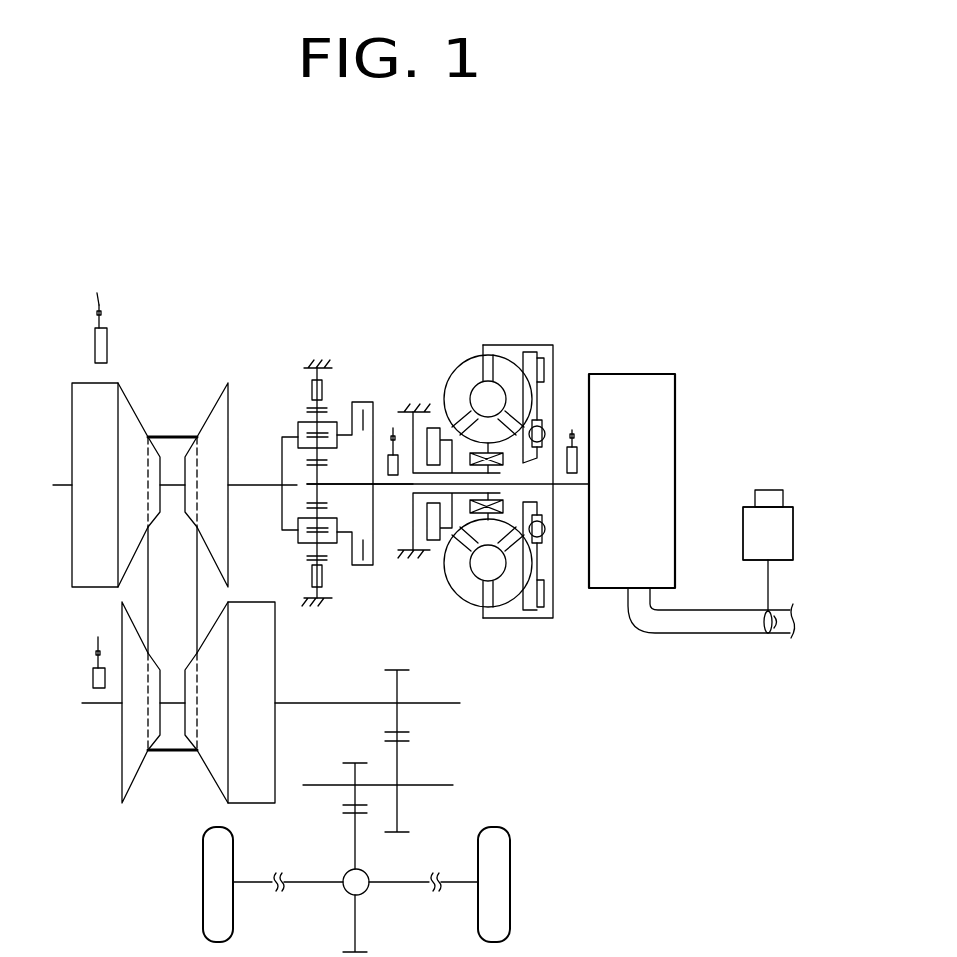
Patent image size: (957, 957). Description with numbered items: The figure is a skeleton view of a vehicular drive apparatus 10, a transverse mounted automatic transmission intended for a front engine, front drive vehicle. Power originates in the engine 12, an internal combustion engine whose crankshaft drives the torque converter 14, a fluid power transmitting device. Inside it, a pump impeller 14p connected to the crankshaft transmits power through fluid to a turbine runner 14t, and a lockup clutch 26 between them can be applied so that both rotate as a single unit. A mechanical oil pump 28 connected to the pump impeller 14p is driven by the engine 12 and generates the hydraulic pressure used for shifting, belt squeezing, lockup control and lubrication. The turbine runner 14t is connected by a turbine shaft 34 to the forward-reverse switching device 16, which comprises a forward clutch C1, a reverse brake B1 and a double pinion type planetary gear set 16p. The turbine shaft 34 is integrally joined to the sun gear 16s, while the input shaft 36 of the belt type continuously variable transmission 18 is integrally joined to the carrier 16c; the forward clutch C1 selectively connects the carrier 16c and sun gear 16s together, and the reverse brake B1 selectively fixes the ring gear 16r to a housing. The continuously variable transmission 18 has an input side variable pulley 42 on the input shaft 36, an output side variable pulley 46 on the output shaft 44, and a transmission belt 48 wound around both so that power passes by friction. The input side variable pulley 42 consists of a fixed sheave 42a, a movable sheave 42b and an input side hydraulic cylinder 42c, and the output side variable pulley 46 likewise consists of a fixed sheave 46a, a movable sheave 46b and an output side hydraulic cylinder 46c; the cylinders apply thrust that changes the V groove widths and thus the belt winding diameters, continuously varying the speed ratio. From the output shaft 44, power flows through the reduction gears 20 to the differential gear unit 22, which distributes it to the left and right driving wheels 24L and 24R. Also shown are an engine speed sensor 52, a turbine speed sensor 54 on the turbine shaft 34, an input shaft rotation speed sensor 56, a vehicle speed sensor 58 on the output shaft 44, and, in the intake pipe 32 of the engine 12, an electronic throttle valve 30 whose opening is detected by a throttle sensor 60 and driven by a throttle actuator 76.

The vehicular drive apparatus 10 is at (492, 268).
The engine 12 is at (667, 438).
The torque converter 14 is at (495, 461).
The pump impeller 14p is at (458, 590).
The turbine runner 14t is at (503, 593).
The forward-reverse switching device 16 is at (316, 425).
The planetary gear set 16p is at (302, 352).
The carrier 16c is at (290, 428).
The sun gear 16s is at (310, 492).
The ring gear 16r is at (310, 567).
The belt type continuously variable transmission 18 is at (163, 807).
The reduction gears 20 is at (462, 752).
The differential gear unit 22 is at (346, 890).
The left driving wheel 24L is at (205, 908).
The right driving wheel 24R is at (508, 905).
The lockup clutch 26 is at (545, 362).
The mechanical oil pump 28 is at (433, 427).
The electronic throttle valve 30 is at (780, 636).
The intake pipe 32 is at (702, 623).
The turbine shaft 34 is at (387, 495).
The input shaft 36 is at (240, 480).
The input side variable pulley 42 is at (128, 484).
The fixed sheave 42a is at (215, 410).
The movable sheave 42b is at (125, 415).
The input side hydraulic cylinder 42c is at (80, 403).
The output shaft 44 is at (335, 705).
The output side variable pulley 46 is at (174, 723).
The fixed sheave 46a is at (130, 760).
The movable sheave 46b is at (200, 755).
The output side hydraulic cylinder 46c is at (267, 682).
The transmission belt 48 is at (172, 435).
The engine speed sensor 52 is at (568, 428).
The turbine speed sensor 54 is at (392, 428).
The input shaft rotation speed sensor 56 is at (108, 336).
The vehicle speed sensor 58 is at (93, 677).
The throttle sensor 60 is at (768, 497).
The throttle actuator 76 is at (752, 535).
The reverse brake B1 is at (300, 386).
The forward clutch C1 is at (358, 468).